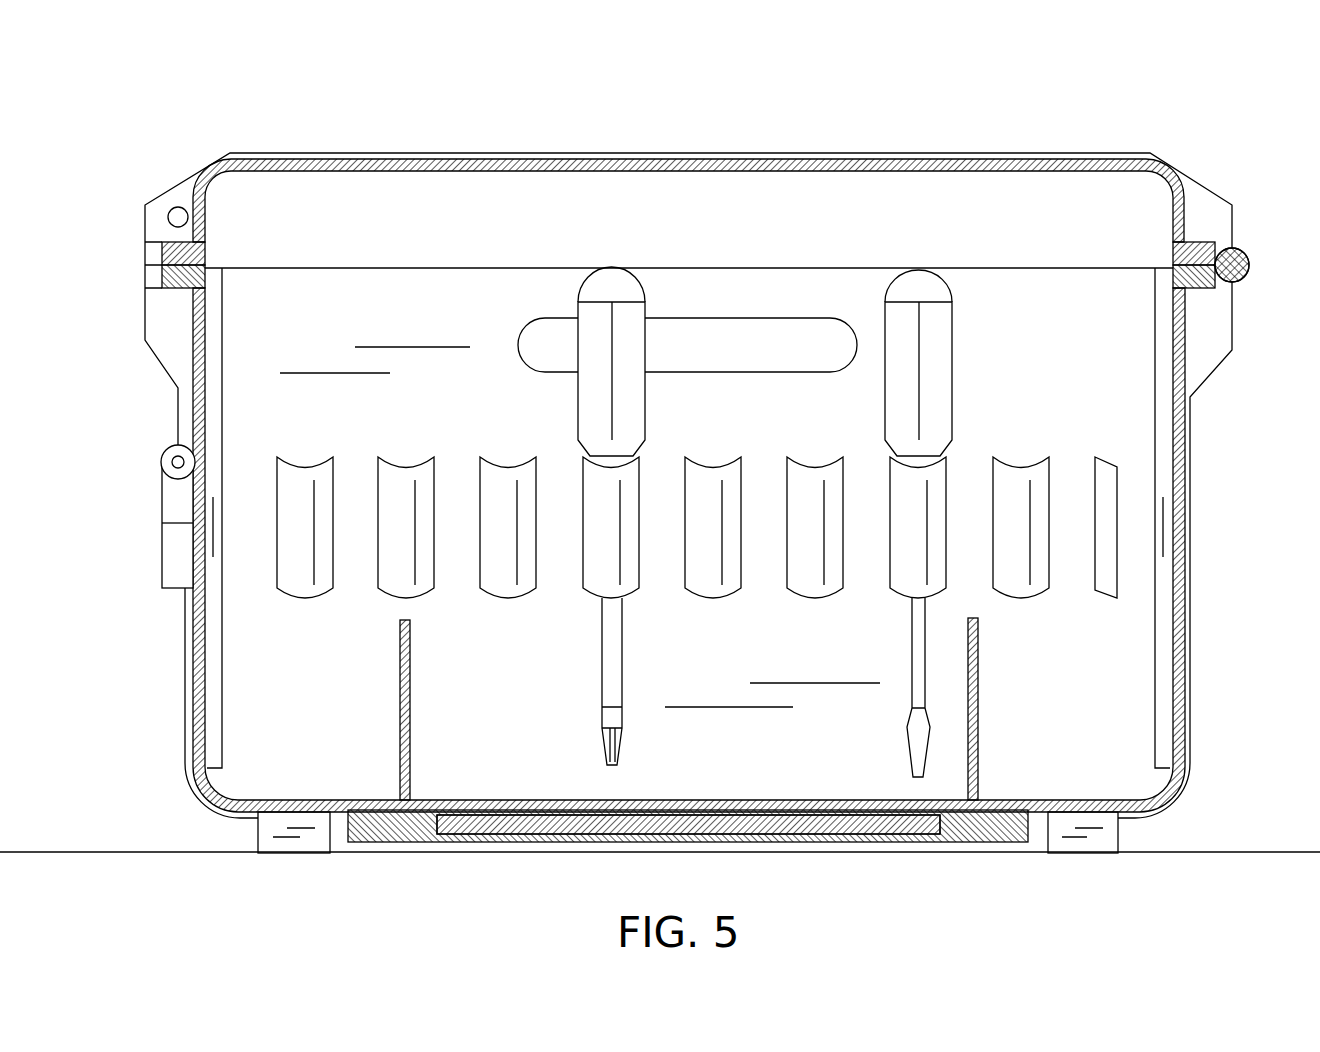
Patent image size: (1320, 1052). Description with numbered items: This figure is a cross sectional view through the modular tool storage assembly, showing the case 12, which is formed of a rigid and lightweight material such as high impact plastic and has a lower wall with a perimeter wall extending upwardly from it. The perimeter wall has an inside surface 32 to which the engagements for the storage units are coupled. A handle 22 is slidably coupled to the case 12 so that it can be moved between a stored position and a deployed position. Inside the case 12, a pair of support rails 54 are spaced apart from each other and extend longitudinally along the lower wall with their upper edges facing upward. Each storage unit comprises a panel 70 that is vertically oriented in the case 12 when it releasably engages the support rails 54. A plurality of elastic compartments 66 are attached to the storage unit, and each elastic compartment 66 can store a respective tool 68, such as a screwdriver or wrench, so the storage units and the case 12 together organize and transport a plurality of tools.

The case 12 is at (1193, 609).
The handle 22 is at (903, 845).
The inside surface 32 is at (1175, 422).
The support rails 54 is at (400, 710).
The elastic compartments 66 is at (510, 432).
The tool 68 is at (890, 290).
The panel 70 is at (348, 268).